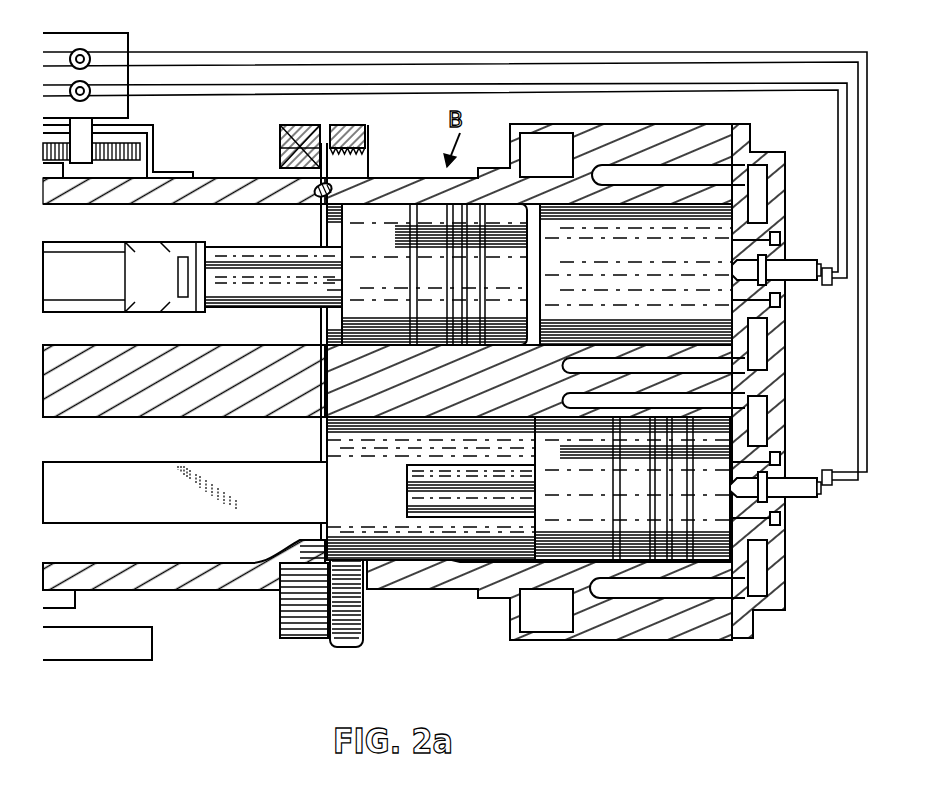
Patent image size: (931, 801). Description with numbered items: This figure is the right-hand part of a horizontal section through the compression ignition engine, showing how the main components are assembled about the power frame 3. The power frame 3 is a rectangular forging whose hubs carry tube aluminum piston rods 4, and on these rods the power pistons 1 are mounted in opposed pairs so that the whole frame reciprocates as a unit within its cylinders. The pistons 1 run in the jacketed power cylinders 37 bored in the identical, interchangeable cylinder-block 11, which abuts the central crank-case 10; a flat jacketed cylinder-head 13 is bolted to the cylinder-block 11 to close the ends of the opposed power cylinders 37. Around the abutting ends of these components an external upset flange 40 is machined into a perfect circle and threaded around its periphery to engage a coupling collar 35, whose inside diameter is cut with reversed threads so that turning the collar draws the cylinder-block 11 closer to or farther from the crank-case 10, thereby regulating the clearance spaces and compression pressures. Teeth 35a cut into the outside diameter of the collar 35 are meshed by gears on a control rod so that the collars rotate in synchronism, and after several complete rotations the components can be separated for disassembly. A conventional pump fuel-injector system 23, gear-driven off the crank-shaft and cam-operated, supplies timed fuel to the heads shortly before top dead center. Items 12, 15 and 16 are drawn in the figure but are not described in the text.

The power piston 1 is at (540, 260).
The power frame 3 is at (88, 242).
The piston rod 4 is at (267, 247).
The crank-case 10 is at (211, 590).
The cylinder-block 11 is at (680, 122).
The mounting bracket 12 is at (530, 127).
The cylinder-head 13 is at (785, 240).
The adjusting screw 15 is at (314, 198).
The terminal 16 is at (802, 273).
The pump fuel-injector system 23 is at (132, 48).
The coupling collar 35 is at (283, 133).
The teeth 35a is at (358, 125).
The power cylinder 37 is at (387, 252).
The upset flange 40 is at (281, 168).